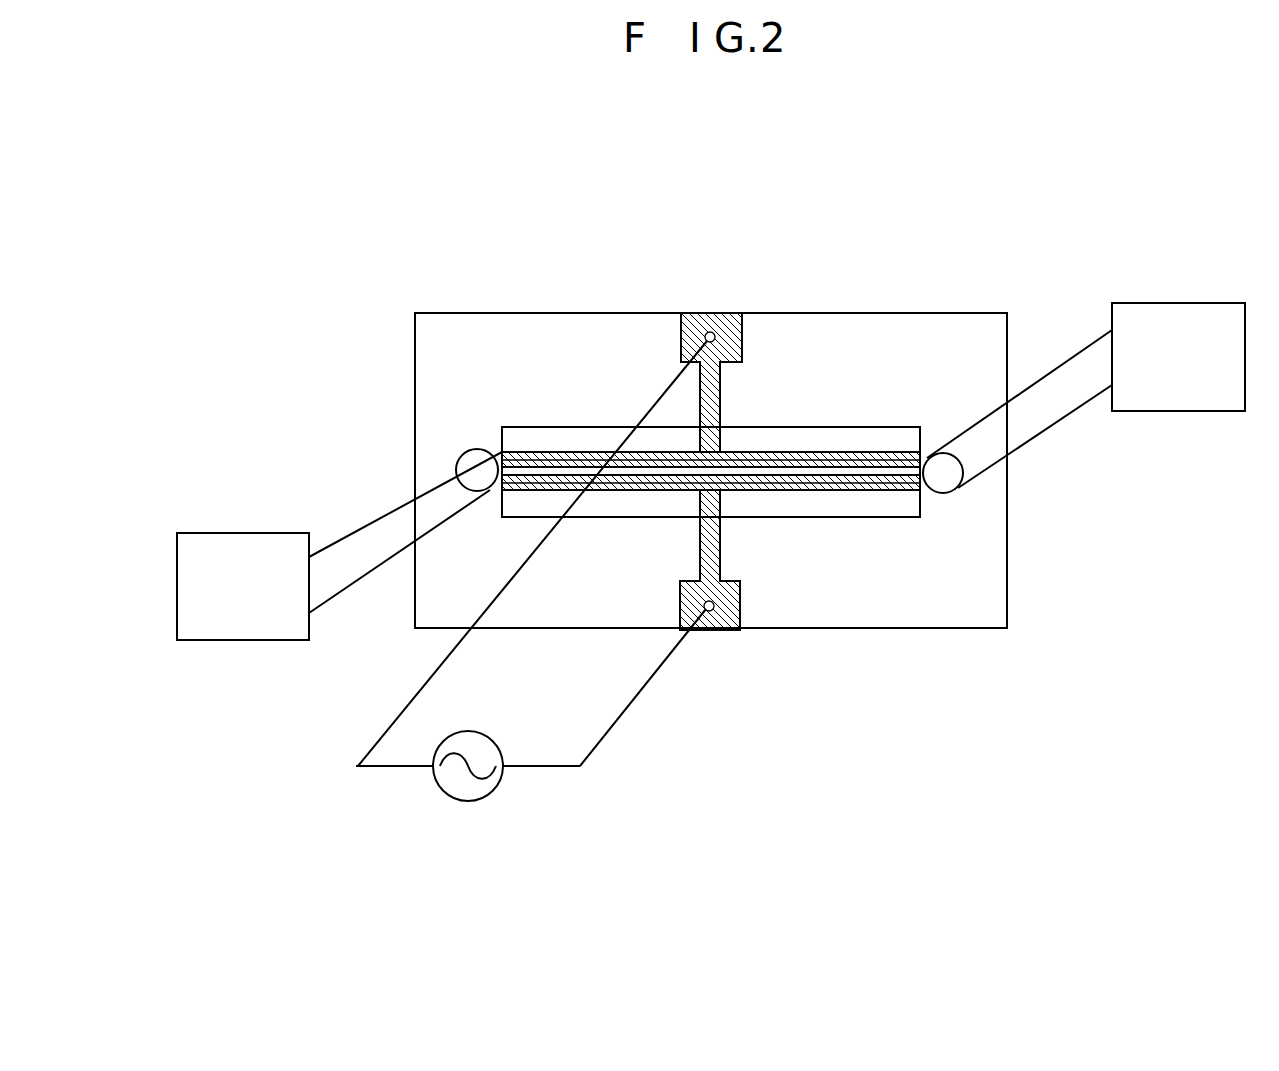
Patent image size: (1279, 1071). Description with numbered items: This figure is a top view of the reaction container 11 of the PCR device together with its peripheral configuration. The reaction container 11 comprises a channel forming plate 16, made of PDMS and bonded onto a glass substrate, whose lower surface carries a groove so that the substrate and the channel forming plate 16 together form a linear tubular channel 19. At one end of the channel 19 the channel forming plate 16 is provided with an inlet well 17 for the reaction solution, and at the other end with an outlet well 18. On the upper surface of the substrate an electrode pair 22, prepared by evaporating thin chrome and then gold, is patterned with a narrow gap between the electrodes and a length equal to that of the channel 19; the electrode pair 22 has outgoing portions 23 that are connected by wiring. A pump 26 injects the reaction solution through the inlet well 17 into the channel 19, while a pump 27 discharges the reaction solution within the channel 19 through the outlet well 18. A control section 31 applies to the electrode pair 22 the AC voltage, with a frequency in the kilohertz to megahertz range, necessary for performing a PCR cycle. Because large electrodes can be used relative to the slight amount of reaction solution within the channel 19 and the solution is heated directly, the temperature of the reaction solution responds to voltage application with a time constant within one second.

The flow channel device body 11 is at (893, 438).
The channel forming plate 16 is at (1007, 597).
The inlet well 17 is at (456, 470).
The outlet well 18 is at (943, 488).
The channel 19 is at (813, 475).
The electrode pair 22 is at (878, 505).
The outgoing portions 23 is at (743, 332).
The pump 26 is at (240, 640).
The pump 27 is at (1178, 302).
The control section 31 is at (465, 801).